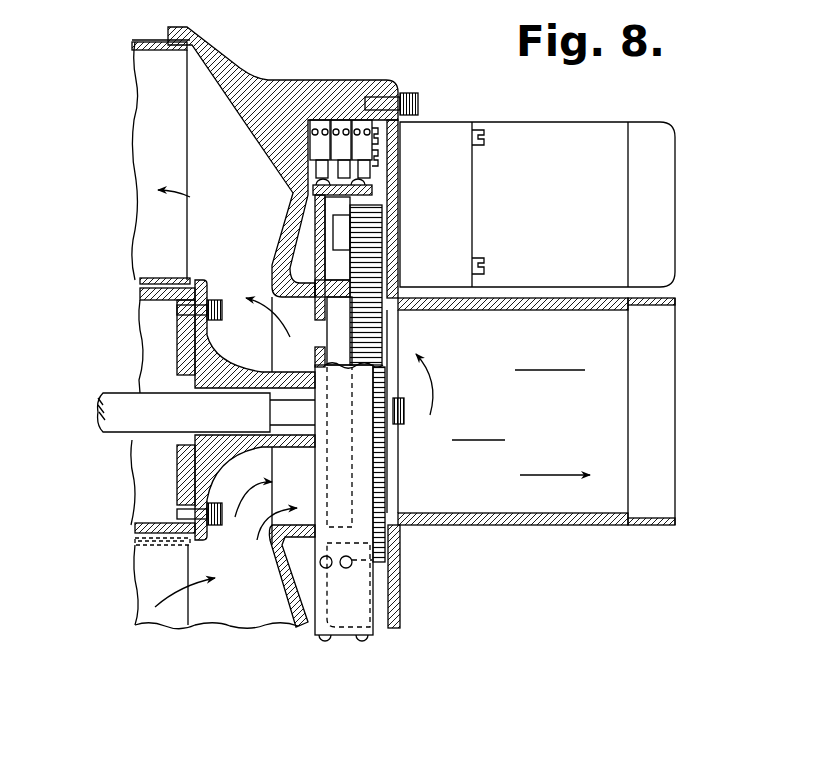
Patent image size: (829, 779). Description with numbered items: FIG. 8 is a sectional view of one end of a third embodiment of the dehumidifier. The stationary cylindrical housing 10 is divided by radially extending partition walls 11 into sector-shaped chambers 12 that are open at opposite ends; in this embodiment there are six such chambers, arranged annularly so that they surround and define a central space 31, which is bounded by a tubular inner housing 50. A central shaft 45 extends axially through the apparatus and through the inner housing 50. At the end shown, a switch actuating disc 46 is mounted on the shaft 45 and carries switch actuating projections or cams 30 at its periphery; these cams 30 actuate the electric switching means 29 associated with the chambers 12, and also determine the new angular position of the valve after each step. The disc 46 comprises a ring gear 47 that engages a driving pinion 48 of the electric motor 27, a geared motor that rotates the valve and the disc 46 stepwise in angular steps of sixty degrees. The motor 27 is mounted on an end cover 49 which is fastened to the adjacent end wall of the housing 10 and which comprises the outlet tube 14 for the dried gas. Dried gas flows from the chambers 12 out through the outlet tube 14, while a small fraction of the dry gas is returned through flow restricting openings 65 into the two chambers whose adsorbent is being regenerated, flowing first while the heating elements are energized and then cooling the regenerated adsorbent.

The housing 10 is at (140, 45).
The chambers 12 is at (150, 108).
The partition walls 11 is at (140, 166).
The electric switching means 29 is at (355, 130).
The cams 30 is at (352, 192).
The electric motor 27 is at (568, 125).
The driving pinion 48 is at (365, 233).
The ring gear 47 is at (383, 332).
The central space 31 is at (145, 345).
The flow restricting openings 65 is at (323, 335).
The central shaft 45 is at (118, 430).
The tubular inner housing 50 is at (135, 525).
The outlet tube 14 is at (572, 528).
The end cover 49 is at (400, 553).
The switch actuating disc 46 is at (365, 592).